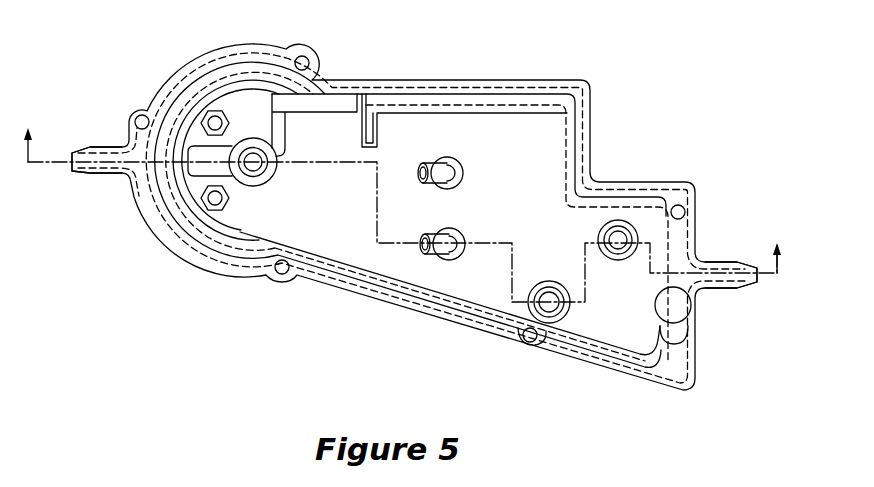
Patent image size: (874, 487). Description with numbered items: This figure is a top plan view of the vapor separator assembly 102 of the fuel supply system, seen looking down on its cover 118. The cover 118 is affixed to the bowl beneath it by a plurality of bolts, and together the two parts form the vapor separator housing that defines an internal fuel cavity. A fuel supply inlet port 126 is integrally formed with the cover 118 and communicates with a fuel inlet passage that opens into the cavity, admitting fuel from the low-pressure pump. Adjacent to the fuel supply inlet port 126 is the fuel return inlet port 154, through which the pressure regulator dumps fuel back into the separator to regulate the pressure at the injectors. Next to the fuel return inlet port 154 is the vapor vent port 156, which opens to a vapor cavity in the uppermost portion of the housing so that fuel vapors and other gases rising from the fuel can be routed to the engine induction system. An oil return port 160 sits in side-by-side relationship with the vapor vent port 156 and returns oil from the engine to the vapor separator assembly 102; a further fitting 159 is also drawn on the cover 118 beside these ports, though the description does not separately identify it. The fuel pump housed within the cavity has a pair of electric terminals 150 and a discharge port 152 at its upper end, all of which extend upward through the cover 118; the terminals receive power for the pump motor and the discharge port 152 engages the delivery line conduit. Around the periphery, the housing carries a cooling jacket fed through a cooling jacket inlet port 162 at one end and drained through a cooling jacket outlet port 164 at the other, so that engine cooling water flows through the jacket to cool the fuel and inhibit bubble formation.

The vapor separator assembly 102 is at (637, 109).
The cover 118 is at (650, 336).
The fuel supply inlet port 126 is at (621, 218).
The electric terminals 150 is at (213, 108).
The discharge port 152 is at (255, 186).
The fuel return inlet port 154 is at (553, 322).
The vapor vent port 156 is at (450, 262).
The upper port fitting 159 is at (438, 160).
The oil return port 160 is at (530, 107).
The cooling jacket inlet port 162 is at (93, 176).
The cooling jacket outlet port 164 is at (722, 290).